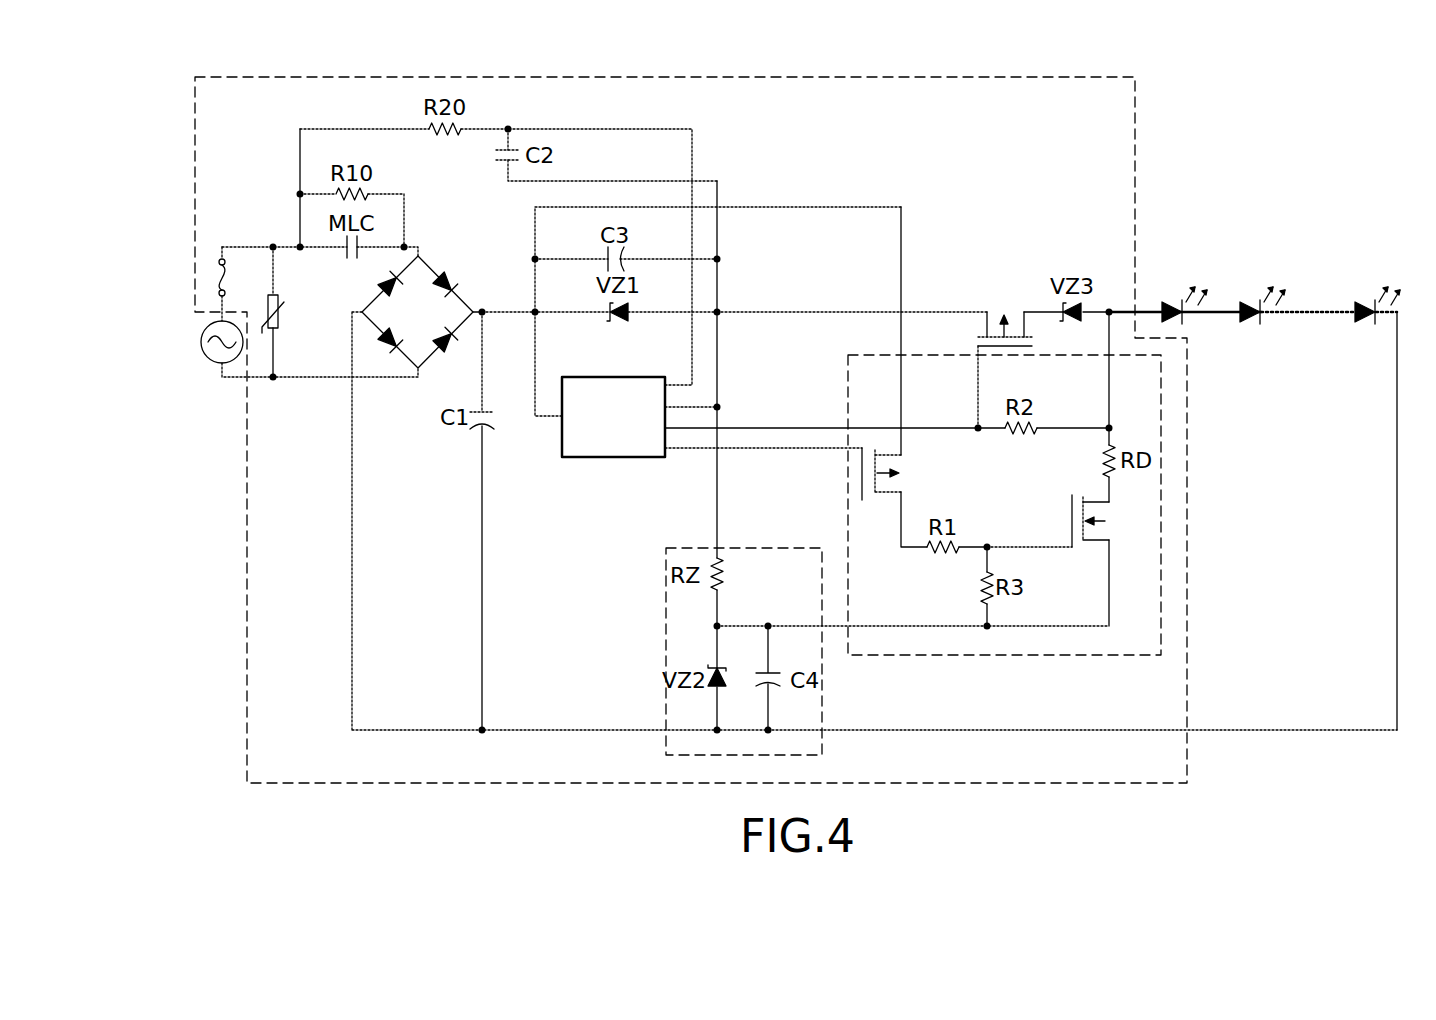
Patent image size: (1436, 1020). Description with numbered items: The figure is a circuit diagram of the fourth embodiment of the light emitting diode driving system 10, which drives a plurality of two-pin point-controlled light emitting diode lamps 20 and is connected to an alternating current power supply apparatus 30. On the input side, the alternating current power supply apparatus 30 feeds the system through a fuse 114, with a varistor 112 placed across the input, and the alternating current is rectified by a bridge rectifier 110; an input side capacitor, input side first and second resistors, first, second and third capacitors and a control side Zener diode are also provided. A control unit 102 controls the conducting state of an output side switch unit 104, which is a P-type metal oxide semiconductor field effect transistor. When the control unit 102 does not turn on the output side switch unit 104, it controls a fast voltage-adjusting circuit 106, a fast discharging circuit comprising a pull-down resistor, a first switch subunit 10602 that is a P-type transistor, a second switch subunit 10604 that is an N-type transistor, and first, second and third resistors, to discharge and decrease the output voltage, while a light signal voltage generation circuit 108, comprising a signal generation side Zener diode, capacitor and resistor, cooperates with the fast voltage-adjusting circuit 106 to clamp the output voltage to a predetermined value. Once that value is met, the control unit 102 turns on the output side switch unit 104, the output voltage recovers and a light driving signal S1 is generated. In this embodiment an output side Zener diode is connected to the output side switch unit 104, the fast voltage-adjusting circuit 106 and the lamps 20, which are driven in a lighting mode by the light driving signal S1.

The light emitting diode driving system 10 is at (665, 80).
The two-pin point-controlled light emitting diode lamps 20 is at (1375, 272).
The alternating current power supply apparatus 30 is at (207, 329).
The control unit 102 is at (603, 385).
The output side switch unit 104 is at (1043, 357).
The fast voltage-adjusting circuit 106 is at (1000, 657).
The light signal voltage generation circuit 108 is at (650, 748).
The bridge rectifier 110 is at (422, 312).
The varistor 112 is at (289, 312).
The fuse 114 is at (240, 274).
The first switch subunit 10602 is at (911, 474).
The second switch subunit 10604 is at (1121, 521).
The light driving signal S1 is at (1143, 310).